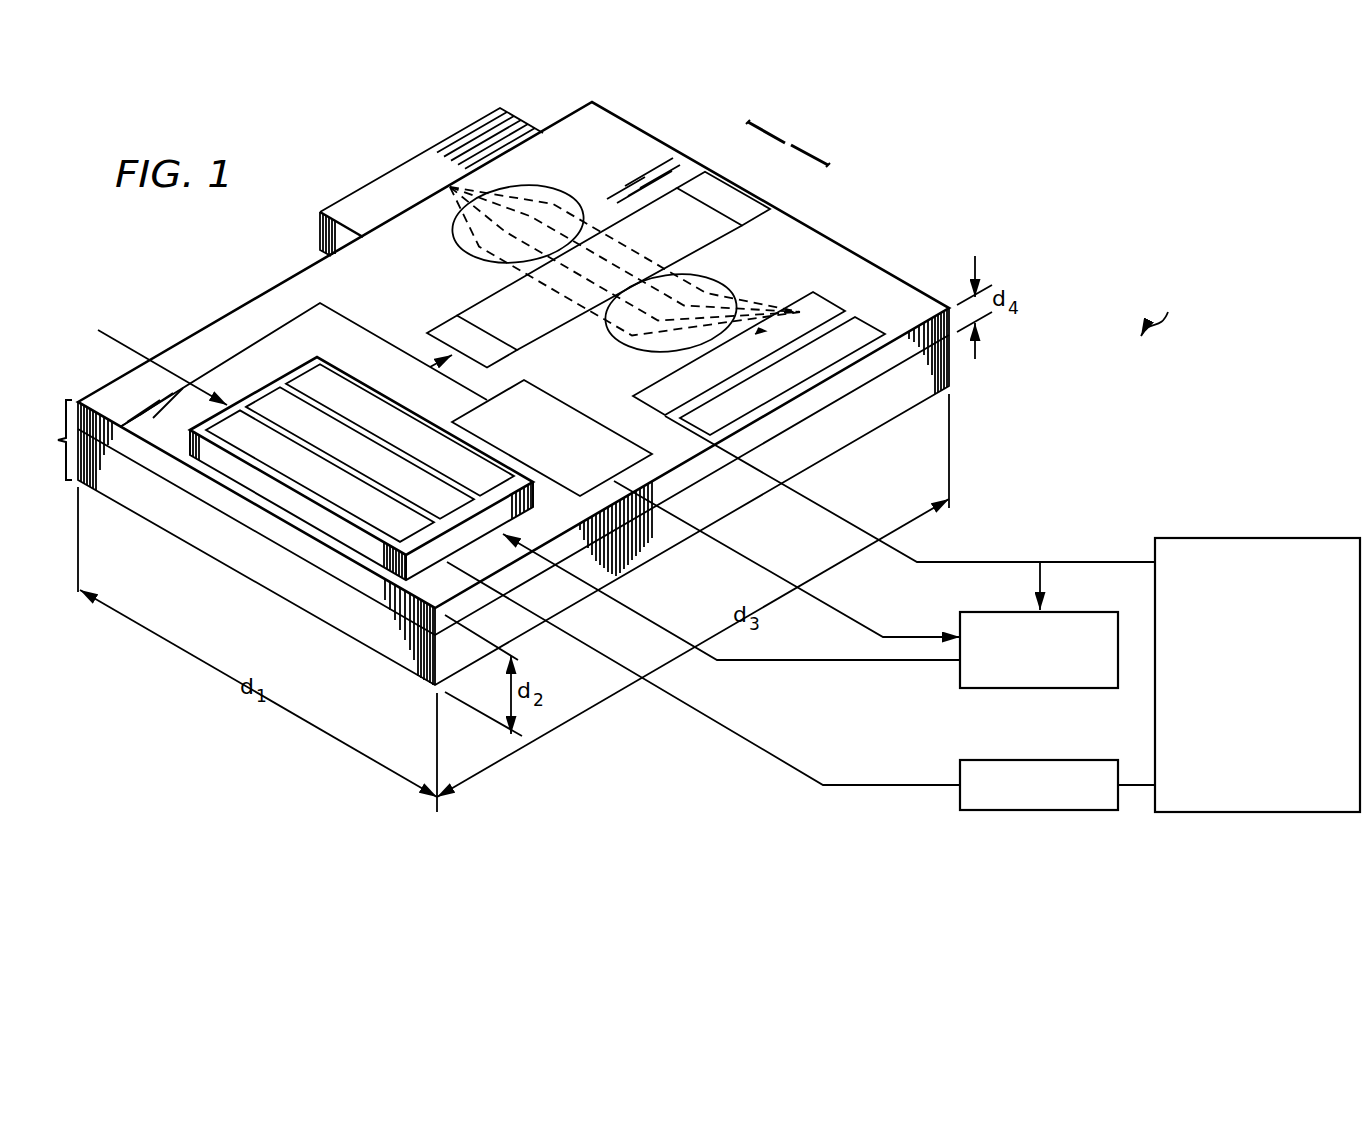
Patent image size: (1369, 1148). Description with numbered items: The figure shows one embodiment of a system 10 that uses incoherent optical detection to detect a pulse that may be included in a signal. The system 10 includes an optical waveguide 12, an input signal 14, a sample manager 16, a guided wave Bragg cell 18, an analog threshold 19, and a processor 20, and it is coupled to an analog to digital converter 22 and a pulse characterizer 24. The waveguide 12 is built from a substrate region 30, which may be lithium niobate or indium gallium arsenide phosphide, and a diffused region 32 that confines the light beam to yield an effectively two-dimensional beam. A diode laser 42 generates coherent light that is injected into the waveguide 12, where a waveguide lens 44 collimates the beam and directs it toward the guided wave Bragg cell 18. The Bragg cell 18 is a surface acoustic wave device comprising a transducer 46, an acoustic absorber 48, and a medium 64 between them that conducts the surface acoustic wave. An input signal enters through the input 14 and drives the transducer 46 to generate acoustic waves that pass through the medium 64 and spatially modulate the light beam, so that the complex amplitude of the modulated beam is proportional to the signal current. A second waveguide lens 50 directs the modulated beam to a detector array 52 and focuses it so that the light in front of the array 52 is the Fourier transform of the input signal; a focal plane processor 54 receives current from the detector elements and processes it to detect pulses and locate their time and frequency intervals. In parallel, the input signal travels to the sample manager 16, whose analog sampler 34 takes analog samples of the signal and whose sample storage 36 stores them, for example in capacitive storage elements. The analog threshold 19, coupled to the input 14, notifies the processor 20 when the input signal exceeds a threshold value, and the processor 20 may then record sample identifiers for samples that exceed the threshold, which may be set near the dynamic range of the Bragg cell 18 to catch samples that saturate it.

The system 10 is at (1166, 307).
The optical waveguide 12 is at (47, 440).
The input signal 14 is at (122, 341).
The sample manager 16 is at (237, 468).
The guided wave Bragg cell 18 is at (795, 144).
The analog threshold 19 is at (590, 424).
The processor 20 is at (1052, 689).
The analog to digital converter 22 is at (1052, 812).
The pulse characterizer 24 is at (1242, 722).
The substrate region 30 is at (355, 636).
The diffused region 32 is at (270, 526).
The analog sampler 34 is at (263, 397).
The sample storage 36 is at (333, 514).
The diode laser 42 is at (415, 167).
The waveguide lens 44 is at (574, 194).
The transducer 46 is at (437, 325).
The acoustic absorber 48 is at (730, 193).
The waveguide lens 50 is at (722, 291).
The detector array 52 is at (832, 299).
The focal plane processor 54 is at (874, 322).
The medium 64 is at (548, 333).